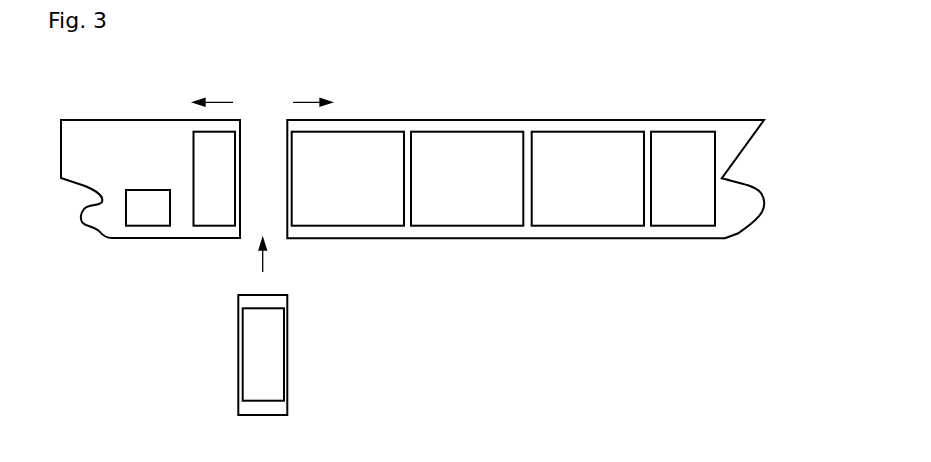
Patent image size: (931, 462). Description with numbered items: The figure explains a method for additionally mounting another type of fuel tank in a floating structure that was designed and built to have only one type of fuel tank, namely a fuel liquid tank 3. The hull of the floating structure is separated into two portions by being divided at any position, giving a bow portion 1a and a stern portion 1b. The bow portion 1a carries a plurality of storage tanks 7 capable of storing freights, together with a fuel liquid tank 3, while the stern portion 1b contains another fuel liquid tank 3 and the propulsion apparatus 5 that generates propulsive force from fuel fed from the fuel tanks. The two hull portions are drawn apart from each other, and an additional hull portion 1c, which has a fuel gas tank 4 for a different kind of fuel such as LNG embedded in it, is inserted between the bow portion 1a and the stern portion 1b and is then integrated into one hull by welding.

The bow portion 1a is at (609, 120).
The stern portion 1b is at (120, 120).
The additional hull portion 1c is at (287, 406).
The fuel liquid tank 3 is at (213, 226).
The fuel gas tank 4 is at (287, 353).
The propulsion apparatus 5 is at (146, 226).
The storage tank 7 is at (365, 131).